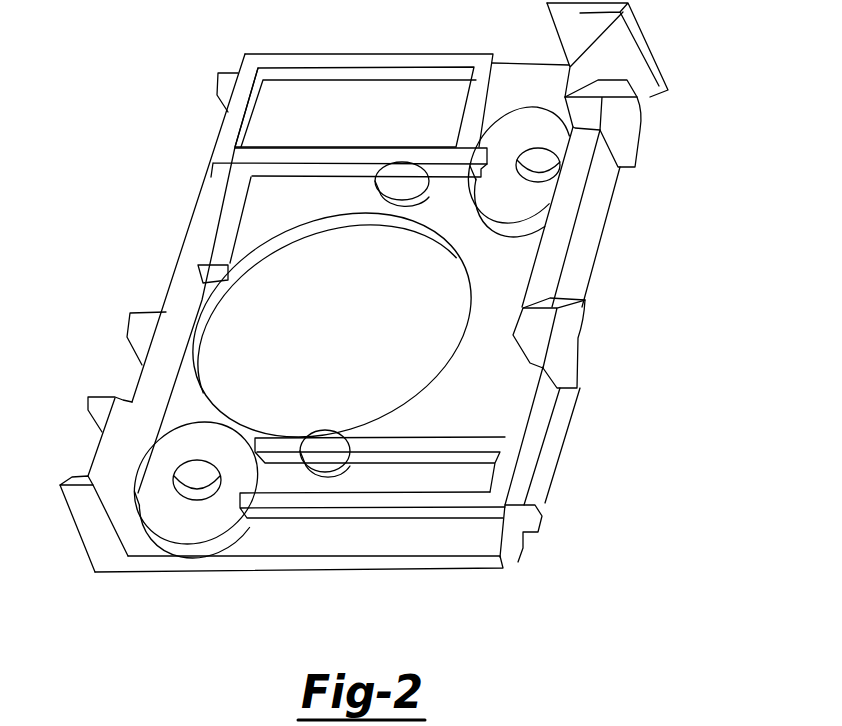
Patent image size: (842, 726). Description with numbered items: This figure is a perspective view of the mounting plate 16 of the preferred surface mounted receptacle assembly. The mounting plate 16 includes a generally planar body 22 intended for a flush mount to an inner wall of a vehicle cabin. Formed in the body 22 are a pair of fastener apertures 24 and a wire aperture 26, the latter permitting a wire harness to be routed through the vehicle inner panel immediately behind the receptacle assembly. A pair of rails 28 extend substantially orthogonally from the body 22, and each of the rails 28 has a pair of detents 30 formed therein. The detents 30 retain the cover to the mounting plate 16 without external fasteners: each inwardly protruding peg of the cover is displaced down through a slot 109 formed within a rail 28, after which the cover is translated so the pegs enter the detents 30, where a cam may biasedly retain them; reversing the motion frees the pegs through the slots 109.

The mounting plate 16 is at (148, 160).
The body 22 is at (273, 545).
The fastener apertures 24 is at (528, 158).
The wire aperture 26 is at (282, 255).
The rails 28 is at (578, 262).
The detents 30 is at (637, 130).
The slot 109 is at (611, 60).